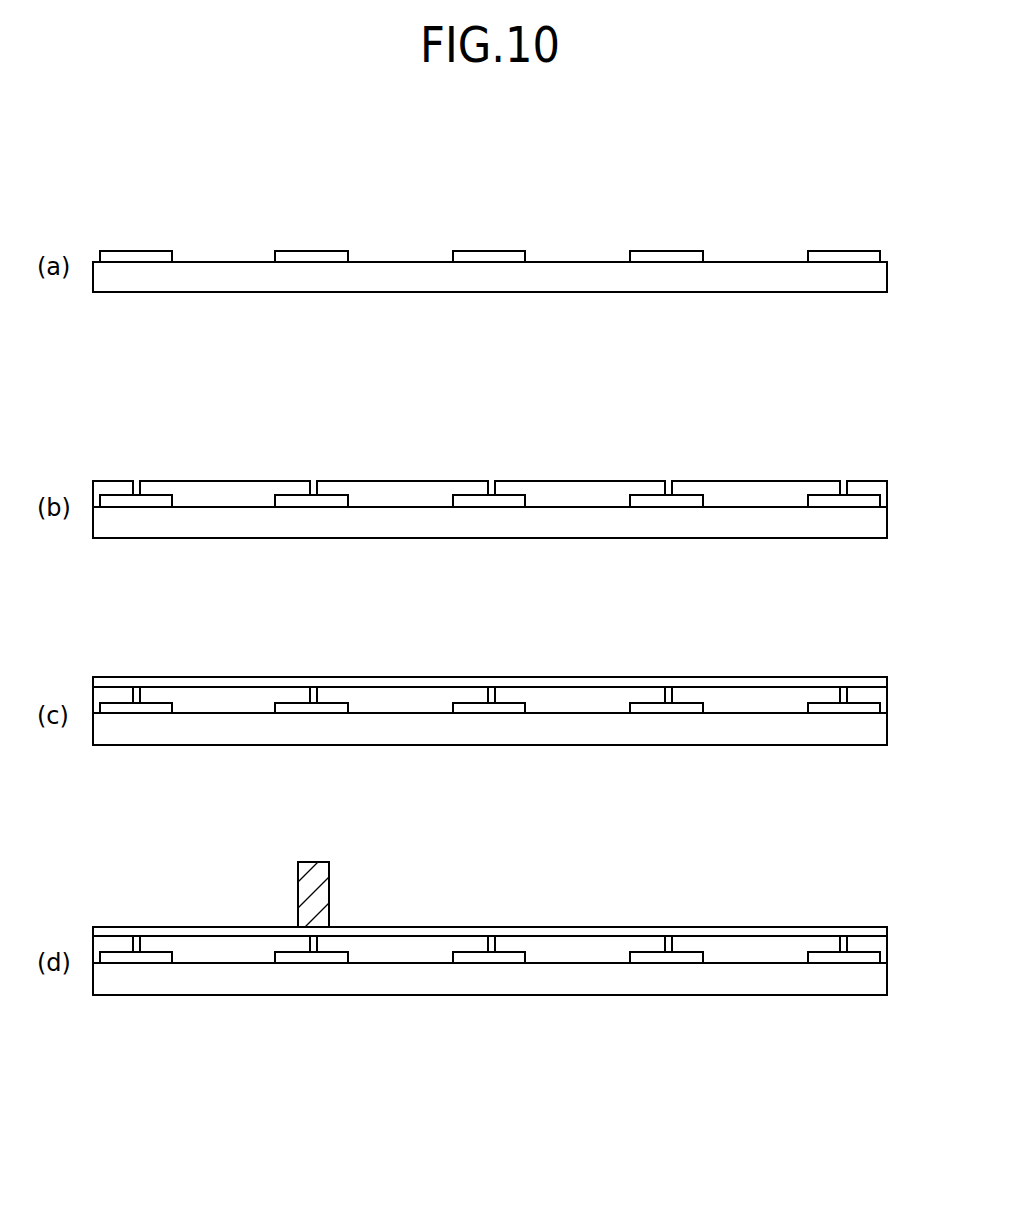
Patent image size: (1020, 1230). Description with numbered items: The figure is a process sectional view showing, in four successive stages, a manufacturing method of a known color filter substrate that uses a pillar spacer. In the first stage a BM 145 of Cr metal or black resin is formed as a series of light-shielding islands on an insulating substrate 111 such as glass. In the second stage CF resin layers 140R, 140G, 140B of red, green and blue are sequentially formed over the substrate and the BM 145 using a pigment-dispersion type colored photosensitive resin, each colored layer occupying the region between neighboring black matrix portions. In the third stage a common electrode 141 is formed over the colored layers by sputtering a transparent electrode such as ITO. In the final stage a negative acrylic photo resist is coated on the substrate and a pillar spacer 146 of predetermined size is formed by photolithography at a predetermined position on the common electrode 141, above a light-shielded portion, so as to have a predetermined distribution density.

The insulating substrate 111 is at (812, 282).
The BM 145 is at (500, 255).
The CF resin layer 140B is at (230, 488).
The CF resin layer 140R is at (402, 490).
The CF resin layer 140G is at (578, 490).
The common electrode 141 is at (303, 682).
The pillar spacer 146 is at (318, 898).